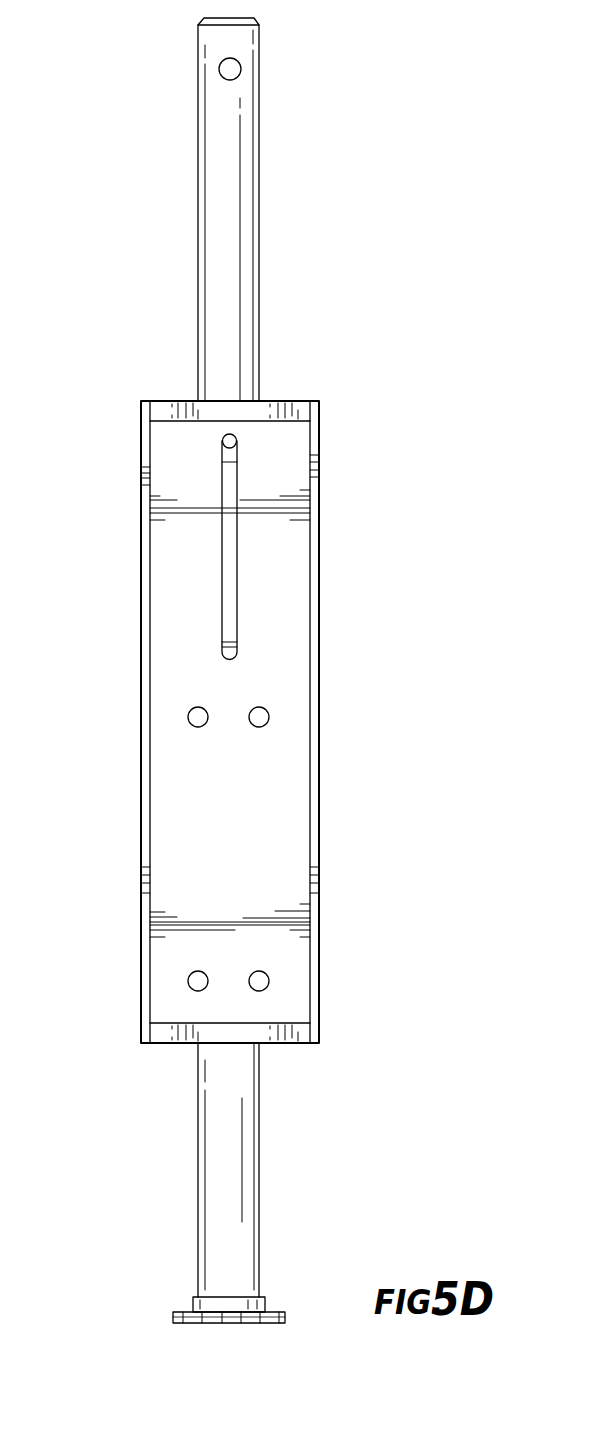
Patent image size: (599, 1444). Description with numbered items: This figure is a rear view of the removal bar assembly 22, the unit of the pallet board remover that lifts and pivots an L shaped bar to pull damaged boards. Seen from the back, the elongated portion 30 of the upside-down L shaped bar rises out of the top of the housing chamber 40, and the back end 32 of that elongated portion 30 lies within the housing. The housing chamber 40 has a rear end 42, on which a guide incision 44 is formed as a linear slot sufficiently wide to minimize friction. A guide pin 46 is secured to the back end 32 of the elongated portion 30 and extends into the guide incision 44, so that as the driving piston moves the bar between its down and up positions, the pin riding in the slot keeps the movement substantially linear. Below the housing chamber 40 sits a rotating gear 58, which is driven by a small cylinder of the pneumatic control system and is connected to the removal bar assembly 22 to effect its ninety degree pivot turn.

The removal bar assembly 22 is at (390, 191).
The elongated portion 30 is at (186, 153).
The back end 32 is at (249, 316).
The housing chamber 40 is at (325, 673).
The rear end 42 is at (180, 767).
The guide incision 44 is at (210, 537).
The guide pin 46 is at (210, 440).
The rotating gear 58 is at (292, 1316).